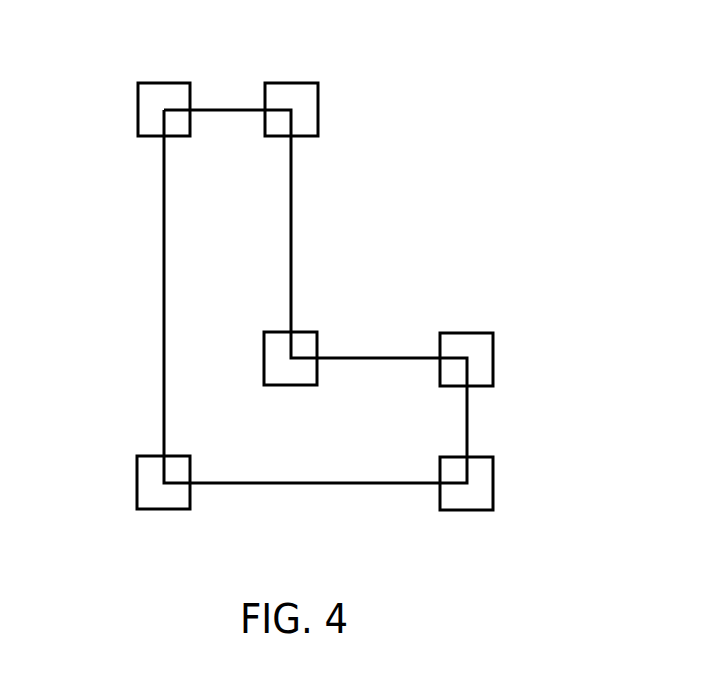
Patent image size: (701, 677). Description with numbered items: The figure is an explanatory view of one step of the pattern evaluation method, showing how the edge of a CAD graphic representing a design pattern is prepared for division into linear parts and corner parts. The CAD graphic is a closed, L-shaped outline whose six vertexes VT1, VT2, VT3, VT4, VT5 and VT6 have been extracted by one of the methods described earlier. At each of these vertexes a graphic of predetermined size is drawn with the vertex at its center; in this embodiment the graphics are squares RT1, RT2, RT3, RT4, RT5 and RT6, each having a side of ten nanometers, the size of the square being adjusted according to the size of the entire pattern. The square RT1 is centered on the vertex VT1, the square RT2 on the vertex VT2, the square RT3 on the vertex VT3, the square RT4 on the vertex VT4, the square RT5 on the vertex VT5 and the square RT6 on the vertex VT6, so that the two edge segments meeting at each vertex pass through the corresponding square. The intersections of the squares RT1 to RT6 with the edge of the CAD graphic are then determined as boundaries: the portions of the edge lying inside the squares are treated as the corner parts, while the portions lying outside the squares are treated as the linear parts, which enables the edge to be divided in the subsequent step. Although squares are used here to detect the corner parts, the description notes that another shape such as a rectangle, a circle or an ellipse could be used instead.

The square RT1 is at (138, 112).
The square RT2 is at (137, 475).
The square RT3 is at (495, 480).
The square RT4 is at (471, 333).
The square RT5 is at (300, 333).
The square RT6 is at (293, 83).
The vertex VT1 is at (164, 150).
The vertex VT2 is at (163, 487).
The vertex VT3 is at (465, 485).
The vertex VT4 is at (468, 356).
The vertex VT5 is at (293, 350).
The vertex VT6 is at (295, 110).